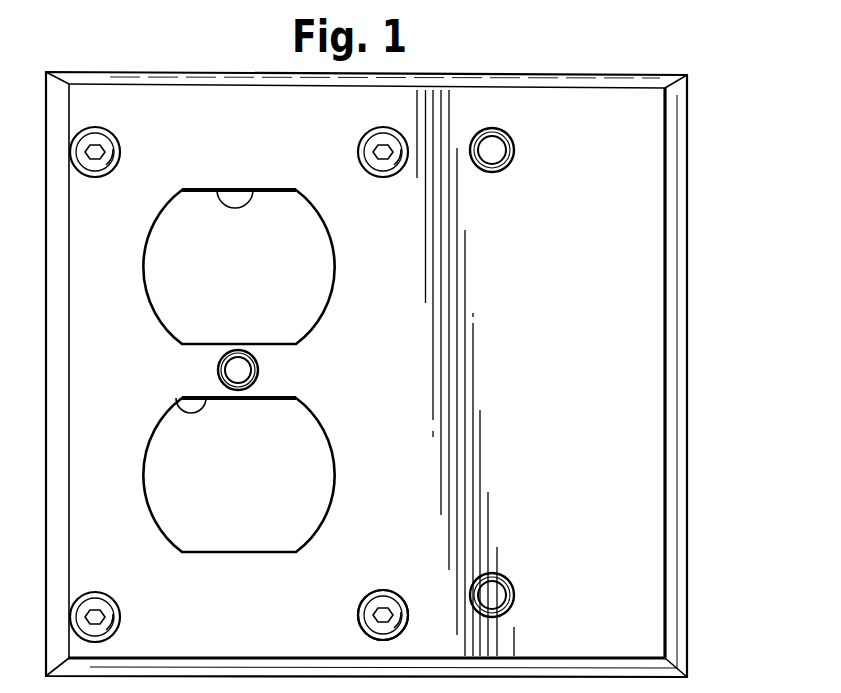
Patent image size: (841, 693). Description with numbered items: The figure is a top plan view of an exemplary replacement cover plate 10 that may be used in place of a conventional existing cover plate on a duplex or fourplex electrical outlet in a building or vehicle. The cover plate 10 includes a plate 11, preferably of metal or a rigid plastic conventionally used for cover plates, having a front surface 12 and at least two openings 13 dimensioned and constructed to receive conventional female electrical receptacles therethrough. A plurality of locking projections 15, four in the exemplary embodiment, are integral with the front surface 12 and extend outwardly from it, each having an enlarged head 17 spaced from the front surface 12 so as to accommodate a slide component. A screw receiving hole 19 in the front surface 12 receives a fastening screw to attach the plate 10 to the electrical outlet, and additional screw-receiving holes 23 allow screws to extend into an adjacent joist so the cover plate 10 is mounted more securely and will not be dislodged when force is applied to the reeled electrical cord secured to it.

The replacement cover plate 10 is at (708, 105).
The plate 11 is at (688, 266).
The front surface 12 is at (584, 402).
The openings 13 is at (248, 205).
The locking projections 15 is at (91, 181).
The enlarged head 17 is at (357, 612).
The screw receiving hole 19 is at (258, 373).
The additional screw-receiving hole 23 is at (514, 149).